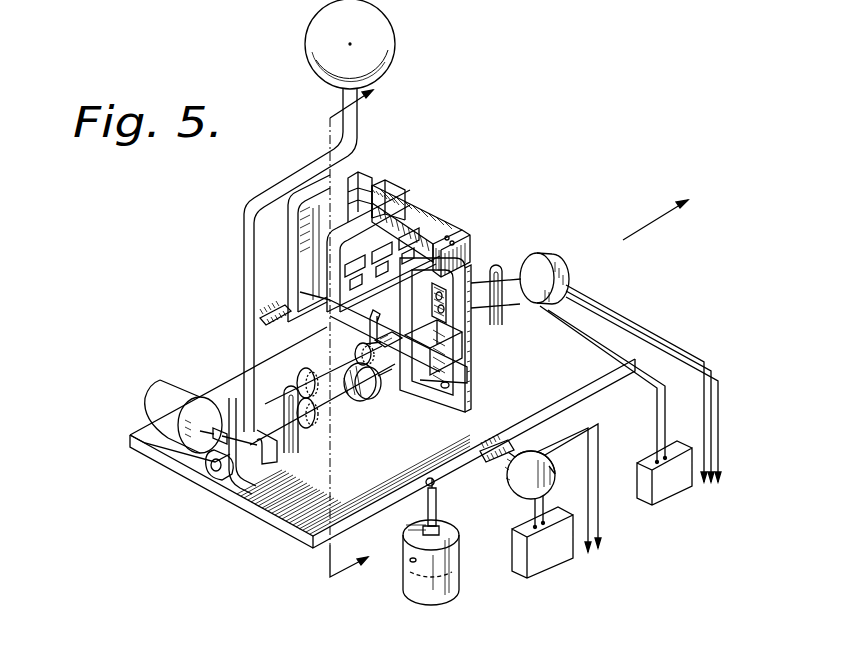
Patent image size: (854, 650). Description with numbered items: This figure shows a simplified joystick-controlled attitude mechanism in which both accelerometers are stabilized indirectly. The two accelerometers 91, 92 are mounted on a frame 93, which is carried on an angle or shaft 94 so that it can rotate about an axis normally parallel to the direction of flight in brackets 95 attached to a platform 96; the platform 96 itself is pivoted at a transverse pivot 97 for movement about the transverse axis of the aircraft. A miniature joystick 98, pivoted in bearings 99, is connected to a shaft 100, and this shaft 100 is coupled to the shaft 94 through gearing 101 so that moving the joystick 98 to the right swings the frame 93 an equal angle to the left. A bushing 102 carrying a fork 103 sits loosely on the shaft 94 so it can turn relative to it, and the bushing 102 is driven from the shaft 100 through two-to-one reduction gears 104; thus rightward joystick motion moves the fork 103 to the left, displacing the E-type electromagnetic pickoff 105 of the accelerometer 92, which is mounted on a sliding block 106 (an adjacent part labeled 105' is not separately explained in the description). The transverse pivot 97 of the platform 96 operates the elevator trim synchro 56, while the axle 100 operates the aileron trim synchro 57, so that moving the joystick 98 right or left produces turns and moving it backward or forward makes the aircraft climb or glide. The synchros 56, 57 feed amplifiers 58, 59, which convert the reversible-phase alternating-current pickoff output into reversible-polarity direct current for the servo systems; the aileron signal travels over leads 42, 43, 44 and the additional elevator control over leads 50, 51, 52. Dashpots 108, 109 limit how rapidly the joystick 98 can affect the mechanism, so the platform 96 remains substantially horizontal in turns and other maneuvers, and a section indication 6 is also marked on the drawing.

The section line 6- 6 is at (361, 342).
The lead 42 is at (708, 402).
The lead 43 is at (714, 420).
The lead 44 is at (720, 437).
The lead 50 is at (598, 466).
The lead 51 is at (598, 440).
The lead 52 is at (600, 455).
The course-changing synchro 56 is at (518, 489).
The course-changing synchro 57 is at (552, 258).
The amplifier 58 is at (545, 562).
The amplifier 59 is at (660, 488).
The accelerometer 91 is at (433, 223).
The accelerometer 92 is at (375, 278).
The frame 93 is at (474, 380).
The angle (shaft) 94 is at (340, 405).
The brackets 95 is at (283, 405).
The platform 96 is at (293, 520).
The transverse pivot 97 is at (262, 316).
The miniature joystick 98 is at (357, 130).
The bearings 99 is at (230, 480).
The shaft 100 is at (355, 400).
The gearing 101 is at (360, 350).
The bushing 102 is at (378, 368).
The fork 103 is at (352, 345).
The 2-to-1 reduction gears 104 is at (368, 400).
The pickoff 105 is at (301, 248).
The housing part 105' is at (263, 285).
The sliding block 106 is at (421, 352).
The dashpot 108 is at (178, 385).
The dashpot 109 is at (443, 597).